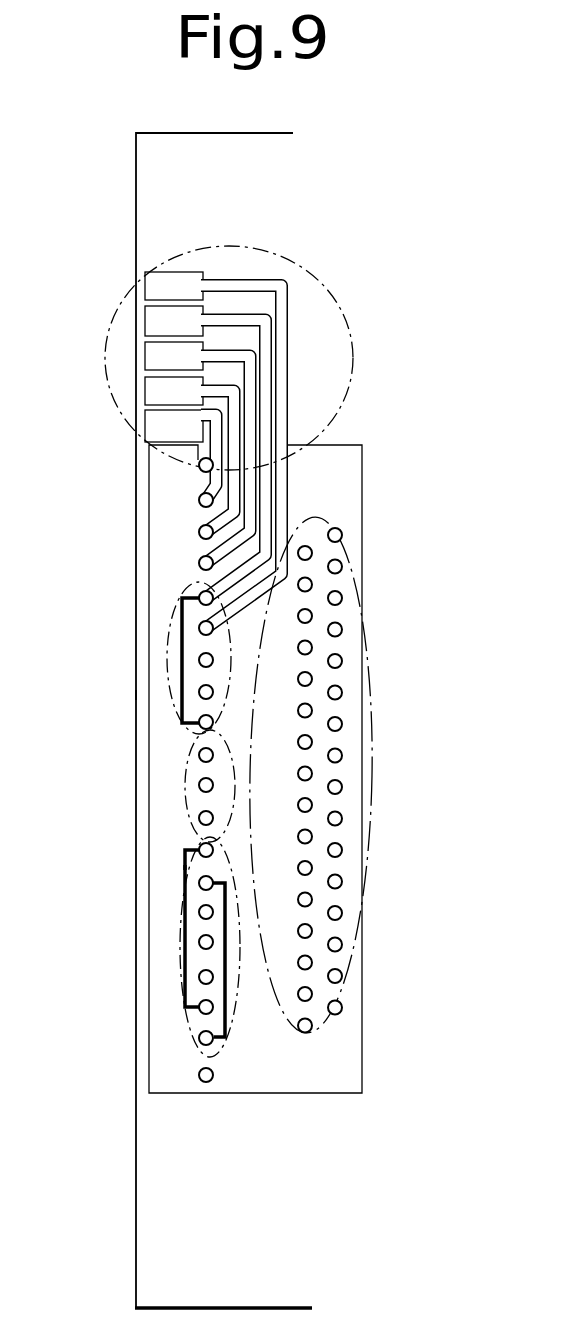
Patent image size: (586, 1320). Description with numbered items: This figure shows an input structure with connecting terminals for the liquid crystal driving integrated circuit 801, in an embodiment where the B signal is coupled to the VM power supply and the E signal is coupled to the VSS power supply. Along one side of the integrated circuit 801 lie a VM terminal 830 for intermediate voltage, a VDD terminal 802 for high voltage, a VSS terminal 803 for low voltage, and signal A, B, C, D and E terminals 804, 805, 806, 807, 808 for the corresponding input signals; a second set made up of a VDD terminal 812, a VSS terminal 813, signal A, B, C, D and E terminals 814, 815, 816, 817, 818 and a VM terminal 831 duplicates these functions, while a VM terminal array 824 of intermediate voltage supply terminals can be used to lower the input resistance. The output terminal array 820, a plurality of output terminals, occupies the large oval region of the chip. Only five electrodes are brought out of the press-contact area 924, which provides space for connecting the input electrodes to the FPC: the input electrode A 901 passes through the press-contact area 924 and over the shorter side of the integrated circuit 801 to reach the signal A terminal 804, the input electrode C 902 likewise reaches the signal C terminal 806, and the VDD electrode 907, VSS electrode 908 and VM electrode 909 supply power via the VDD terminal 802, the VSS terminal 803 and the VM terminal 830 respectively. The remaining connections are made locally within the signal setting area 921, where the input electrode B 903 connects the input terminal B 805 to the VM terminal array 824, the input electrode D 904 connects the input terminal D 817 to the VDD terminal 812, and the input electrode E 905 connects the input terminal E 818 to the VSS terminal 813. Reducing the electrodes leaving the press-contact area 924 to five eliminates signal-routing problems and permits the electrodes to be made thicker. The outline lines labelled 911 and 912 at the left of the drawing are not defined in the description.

The housing top edge 911 is at (240, 144).
The housing side wall 912 is at (137, 757).
The input electrode C 902 is at (145, 283).
The input electrode A 901 is at (145, 320).
The VSS electrode 908 is at (145, 354).
The VDD electrode 907 is at (145, 393).
The VM electrode 909 is at (145, 426).
The press-contact area 924 is at (347, 318).
The liquid crystal driving integrated circuit 801 is at (346, 446).
The VM terminal 830 is at (199, 465).
The VDD terminal 802 is at (199, 500).
The VSS terminal 803 is at (199, 532).
The signal A terminal 804 is at (199, 563).
The signal B terminal 805 is at (199, 598).
The signal C terminal 806 is at (199, 628).
The signal D terminal 807 is at (199, 660).
The signal E terminal 808 is at (199, 692).
The input electrode B 903 is at (182, 722).
The signal setting area 921 is at (166, 716).
The VM terminal array 824 is at (187, 792).
The input electrode E 905 is at (197, 847).
The input electrode D 904 is at (225, 1032).
The signal E terminal 818 is at (199, 850).
The signal D terminal 817 is at (199, 883).
The signal C terminal 816 is at (199, 912).
The signal B terminal 815 is at (199, 942).
The signal A terminal 814 is at (199, 977).
The VSS terminal 813 is at (199, 1007).
The VDD terminal 812 is at (199, 1038).
The VM terminal 831 is at (199, 1075).
The output terminal array 820 is at (372, 728).